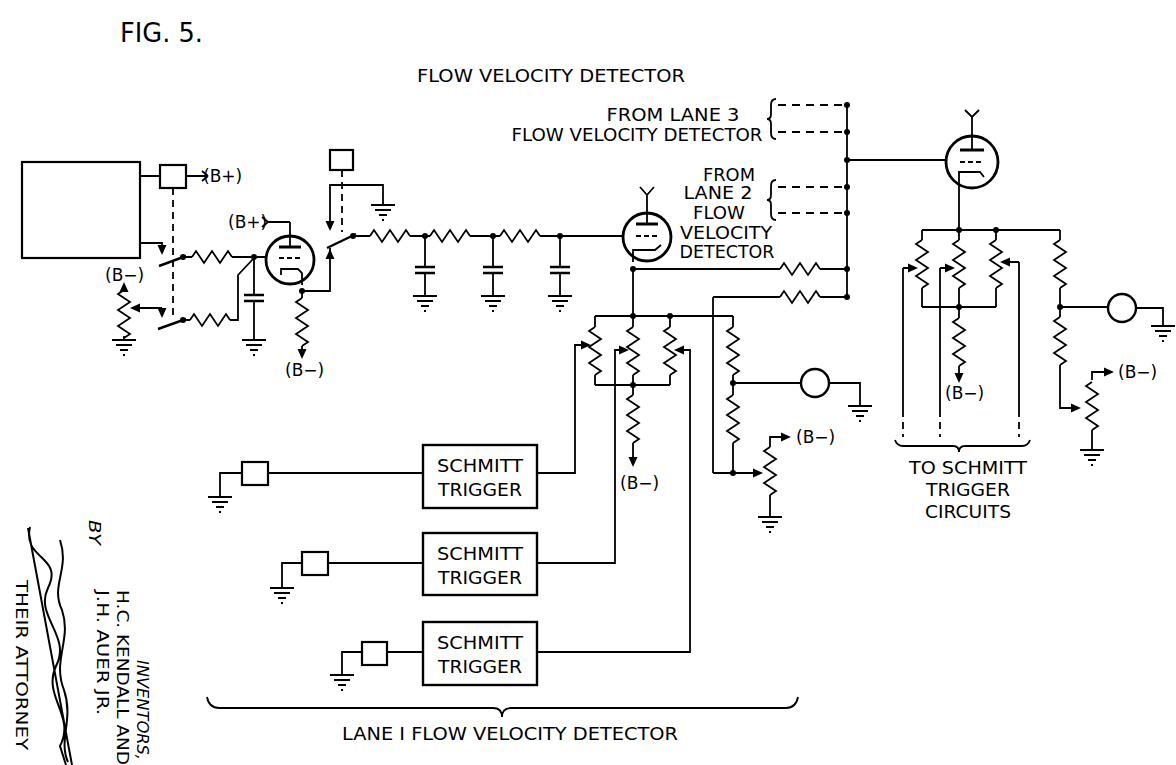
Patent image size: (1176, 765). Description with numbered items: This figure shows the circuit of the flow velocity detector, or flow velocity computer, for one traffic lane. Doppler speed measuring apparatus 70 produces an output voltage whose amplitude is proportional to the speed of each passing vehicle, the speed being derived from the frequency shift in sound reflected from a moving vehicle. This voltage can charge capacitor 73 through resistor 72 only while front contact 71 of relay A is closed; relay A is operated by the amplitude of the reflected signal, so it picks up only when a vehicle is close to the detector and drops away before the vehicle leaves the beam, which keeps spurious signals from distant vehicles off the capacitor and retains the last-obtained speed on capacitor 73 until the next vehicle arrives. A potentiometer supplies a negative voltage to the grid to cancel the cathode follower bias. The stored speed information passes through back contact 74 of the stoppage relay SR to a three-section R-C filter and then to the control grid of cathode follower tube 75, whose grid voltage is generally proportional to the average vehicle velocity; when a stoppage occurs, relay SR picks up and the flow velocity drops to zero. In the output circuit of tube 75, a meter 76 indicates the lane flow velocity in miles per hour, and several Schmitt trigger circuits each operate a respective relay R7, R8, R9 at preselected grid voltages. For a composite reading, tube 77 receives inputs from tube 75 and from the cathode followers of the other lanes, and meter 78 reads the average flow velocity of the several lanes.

The Doppler speed measuring apparatus 70 is at (78, 162).
The relay A is at (174, 165).
The front contact 71 is at (172, 268).
The resistor 72 is at (226, 272).
The capacitor 73 is at (259, 312).
The stoppage relay SR is at (343, 146).
The back contact 74 is at (341, 251).
The cathode follower tube 75 is at (628, 222).
The meter 76 is at (826, 373).
The tube 77 is at (996, 155).
The meter 78 is at (1132, 298).
The relay R7 is at (262, 458).
The relay R8 is at (320, 548).
The relay R9 is at (383, 638).